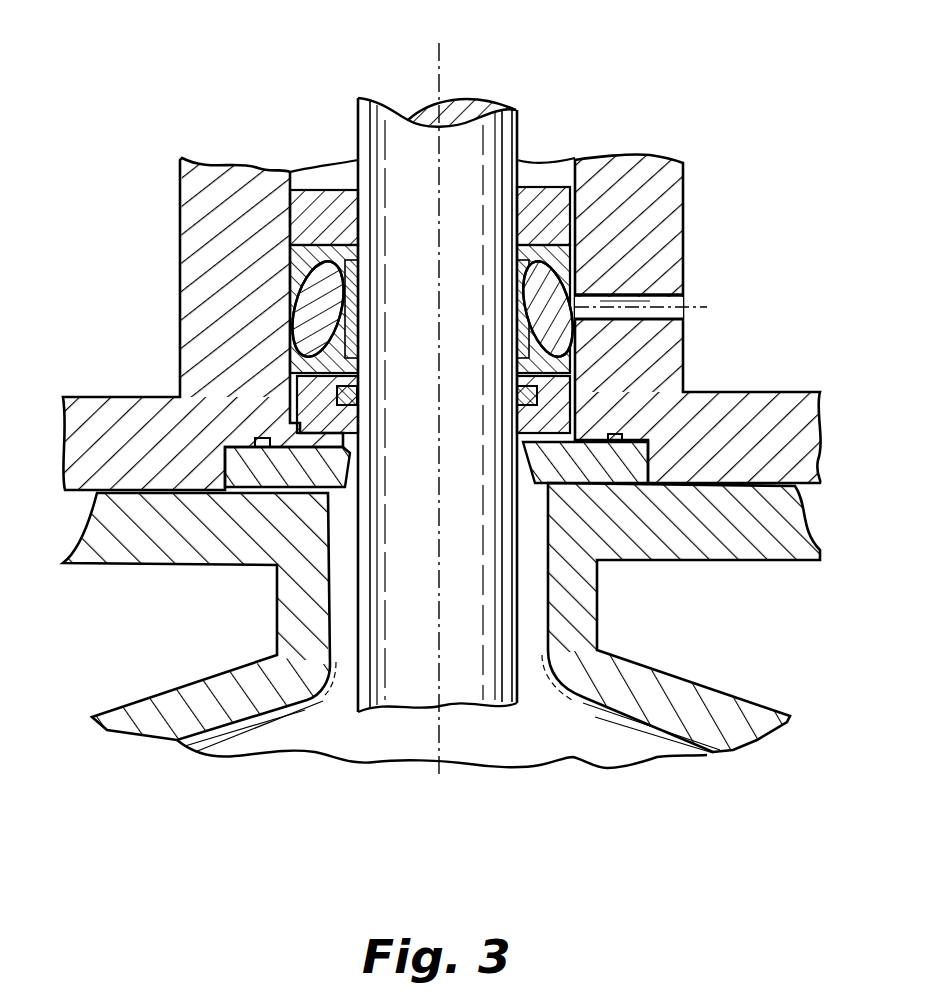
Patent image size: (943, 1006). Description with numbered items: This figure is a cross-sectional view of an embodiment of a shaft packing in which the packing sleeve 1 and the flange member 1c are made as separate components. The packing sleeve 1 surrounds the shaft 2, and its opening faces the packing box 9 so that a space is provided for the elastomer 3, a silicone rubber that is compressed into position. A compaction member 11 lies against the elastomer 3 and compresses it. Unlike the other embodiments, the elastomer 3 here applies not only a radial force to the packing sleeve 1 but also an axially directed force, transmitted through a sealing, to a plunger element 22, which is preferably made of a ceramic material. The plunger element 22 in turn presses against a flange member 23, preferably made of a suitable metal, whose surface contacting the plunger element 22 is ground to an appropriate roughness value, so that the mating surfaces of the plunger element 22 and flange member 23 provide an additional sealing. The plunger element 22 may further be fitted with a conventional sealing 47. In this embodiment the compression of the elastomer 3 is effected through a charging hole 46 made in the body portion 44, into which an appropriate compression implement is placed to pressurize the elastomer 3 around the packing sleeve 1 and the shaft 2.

The packing sleeve 1 is at (358, 332).
The flange member 1c is at (350, 257).
The shaft 2 is at (470, 177).
The elastomer 3 is at (337, 300).
The packing box 9 is at (362, 298).
The compaction member 11 is at (330, 360).
The plunger element 22 is at (320, 413).
The flange member 23 is at (273, 470).
The body portion 44 is at (633, 180).
The charging hole 46 is at (680, 297).
The sealing 47 is at (340, 387).